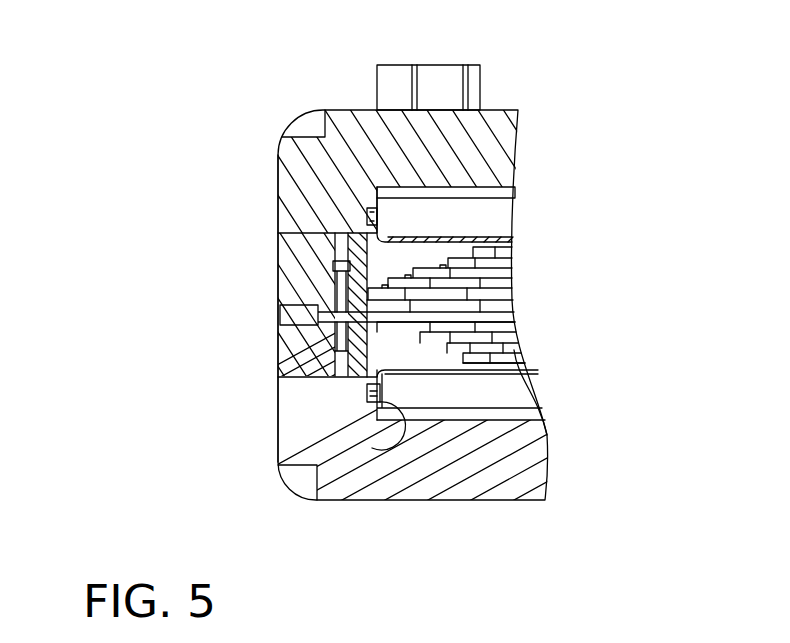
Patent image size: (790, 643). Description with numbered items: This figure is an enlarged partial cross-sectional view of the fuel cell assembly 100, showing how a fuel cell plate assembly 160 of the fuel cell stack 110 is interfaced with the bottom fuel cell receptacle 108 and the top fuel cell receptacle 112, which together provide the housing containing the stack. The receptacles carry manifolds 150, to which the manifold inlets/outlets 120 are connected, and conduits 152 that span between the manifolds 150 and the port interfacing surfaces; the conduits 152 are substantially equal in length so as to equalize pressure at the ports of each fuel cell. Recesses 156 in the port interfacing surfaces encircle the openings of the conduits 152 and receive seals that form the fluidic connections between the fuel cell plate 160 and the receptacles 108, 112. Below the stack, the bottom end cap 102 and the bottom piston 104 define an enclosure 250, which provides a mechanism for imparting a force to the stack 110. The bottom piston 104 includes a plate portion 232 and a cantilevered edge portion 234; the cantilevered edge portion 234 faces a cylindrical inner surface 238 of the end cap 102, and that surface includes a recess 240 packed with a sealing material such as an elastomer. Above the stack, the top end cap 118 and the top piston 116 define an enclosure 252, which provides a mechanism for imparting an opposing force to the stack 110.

The fuel cell assembly 100 is at (290, 78).
The bottom end cap 102 is at (278, 428).
The bottom piston 104 is at (534, 363).
The bottom fuel cell receptacle 108 is at (277, 368).
The fuel cell stack 110 is at (561, 276).
The top fuel cell receptacle 112 is at (277, 277).
The top piston 116 is at (516, 241).
The top end cap 118 is at (278, 153).
The manifold inlets/outlets 120 is at (427, 65).
The manifolds 150 is at (339, 246).
The conduits 152 is at (339, 285).
The recesses 156 is at (318, 326).
The fuel cell plate assembly 160 is at (510, 297).
The plate portion 232 is at (506, 378).
The cantilevered edge portion 234 is at (390, 400).
The cylindrical inner surface 238 is at (377, 445).
The recess 240 is at (383, 391).
The enclosure 250 is at (480, 372).
The enclosure 252 is at (458, 219).